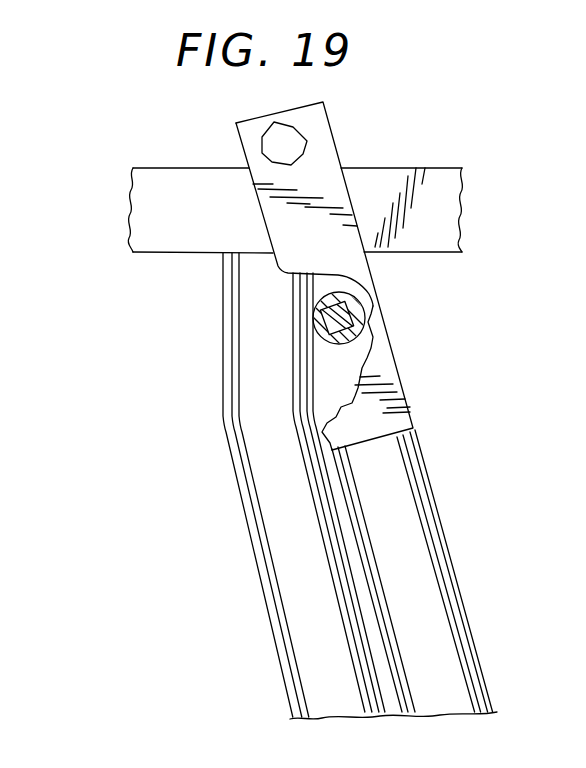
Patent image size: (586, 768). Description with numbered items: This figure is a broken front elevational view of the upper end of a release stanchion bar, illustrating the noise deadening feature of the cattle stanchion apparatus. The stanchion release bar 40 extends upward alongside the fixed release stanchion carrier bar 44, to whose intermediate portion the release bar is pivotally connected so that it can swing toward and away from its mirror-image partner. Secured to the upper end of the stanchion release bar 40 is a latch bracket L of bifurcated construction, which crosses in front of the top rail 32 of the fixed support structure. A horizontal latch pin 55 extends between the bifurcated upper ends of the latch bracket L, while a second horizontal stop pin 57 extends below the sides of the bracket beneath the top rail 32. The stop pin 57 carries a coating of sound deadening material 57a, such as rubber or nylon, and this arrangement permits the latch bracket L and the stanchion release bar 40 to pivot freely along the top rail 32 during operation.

The top rail 32 is at (147, 210).
The stanchion release bar 40 is at (413, 552).
The release stanchion carrier bar 44 is at (285, 538).
The horizontal latch pin 55 is at (285, 150).
The horizontal stop pin 57 is at (345, 311).
The sound deadening material coating 57a is at (333, 327).
The latch bracket L is at (395, 407).